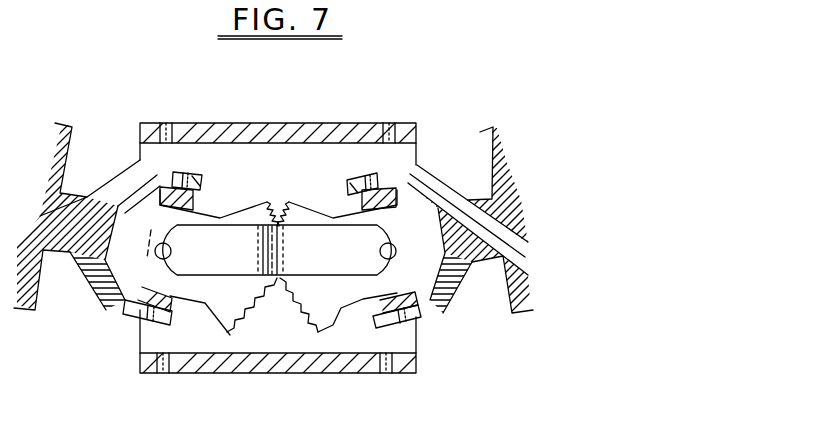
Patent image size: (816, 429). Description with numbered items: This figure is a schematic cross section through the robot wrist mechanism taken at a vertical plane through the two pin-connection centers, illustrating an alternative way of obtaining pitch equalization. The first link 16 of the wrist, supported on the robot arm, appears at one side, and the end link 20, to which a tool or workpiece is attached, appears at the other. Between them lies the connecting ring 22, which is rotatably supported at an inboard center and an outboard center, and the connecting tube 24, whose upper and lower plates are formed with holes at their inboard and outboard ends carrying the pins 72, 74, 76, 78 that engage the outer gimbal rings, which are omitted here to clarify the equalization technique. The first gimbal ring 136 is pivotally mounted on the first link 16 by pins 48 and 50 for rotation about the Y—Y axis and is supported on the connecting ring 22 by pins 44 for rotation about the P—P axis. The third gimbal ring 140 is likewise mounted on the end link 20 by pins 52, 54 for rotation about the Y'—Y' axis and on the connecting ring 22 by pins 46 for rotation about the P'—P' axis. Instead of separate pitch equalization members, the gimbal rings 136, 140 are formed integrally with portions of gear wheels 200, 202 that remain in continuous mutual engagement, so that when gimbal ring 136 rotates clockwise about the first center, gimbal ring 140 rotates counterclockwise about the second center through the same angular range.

The first link 16 is at (100, 177).
The end link 20 is at (481, 298).
The connecting ring 22 is at (242, 260).
The connecting tube 24 is at (282, 123).
The pins 44 is at (158, 256).
The pins 46 is at (394, 247).
The pin 48 is at (178, 175).
The pin 50 is at (138, 318).
The pin 52 is at (368, 182).
The pin 54 is at (400, 320).
The pin 72 is at (173, 122).
The pin 74 is at (163, 374).
The pin 76 is at (395, 123).
The pin 78 is at (388, 374).
The first gimbal ring 136 is at (196, 204).
The third gimbal ring 140 is at (356, 205).
The gear wheel portion 200 is at (236, 318).
The gear wheel portion 202 is at (326, 322).